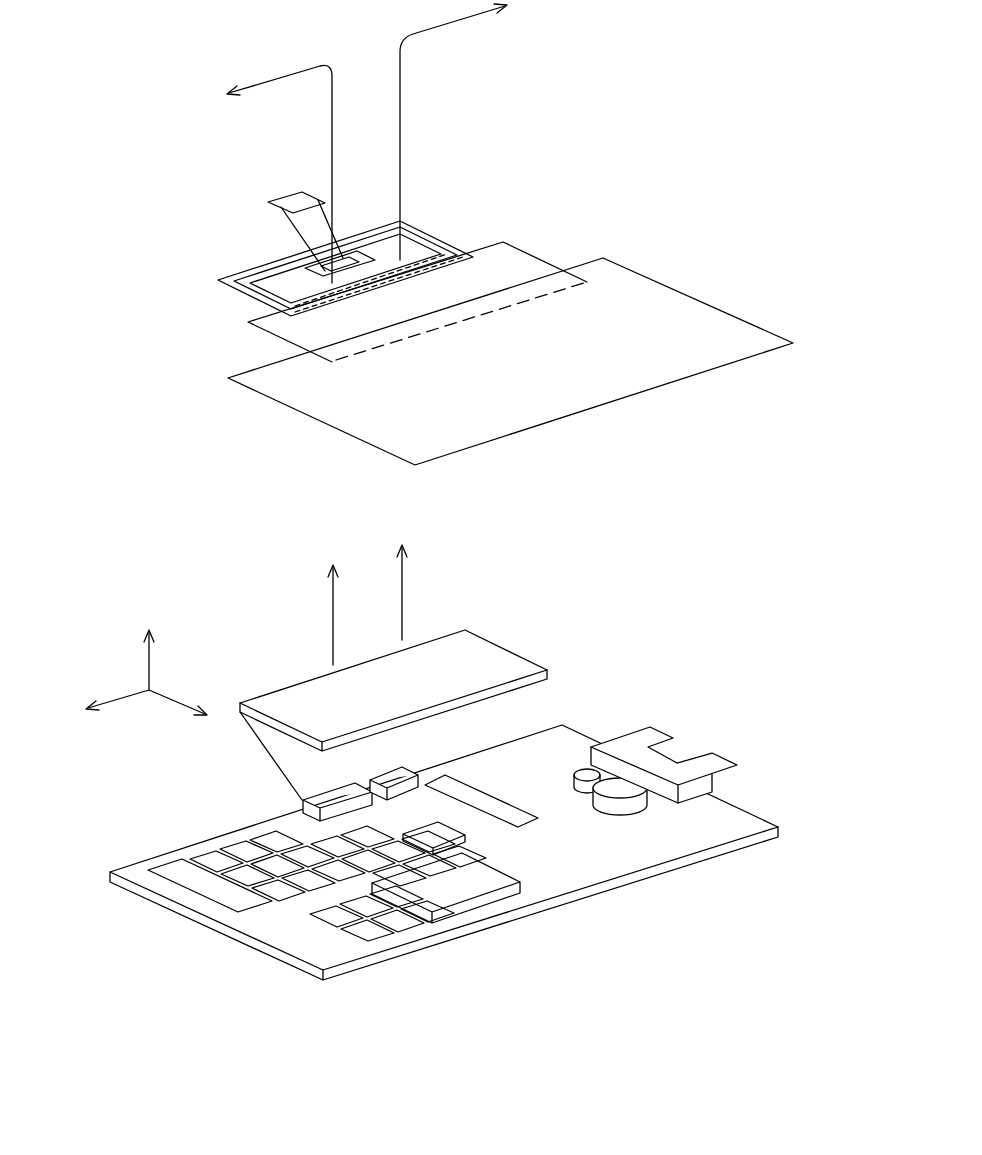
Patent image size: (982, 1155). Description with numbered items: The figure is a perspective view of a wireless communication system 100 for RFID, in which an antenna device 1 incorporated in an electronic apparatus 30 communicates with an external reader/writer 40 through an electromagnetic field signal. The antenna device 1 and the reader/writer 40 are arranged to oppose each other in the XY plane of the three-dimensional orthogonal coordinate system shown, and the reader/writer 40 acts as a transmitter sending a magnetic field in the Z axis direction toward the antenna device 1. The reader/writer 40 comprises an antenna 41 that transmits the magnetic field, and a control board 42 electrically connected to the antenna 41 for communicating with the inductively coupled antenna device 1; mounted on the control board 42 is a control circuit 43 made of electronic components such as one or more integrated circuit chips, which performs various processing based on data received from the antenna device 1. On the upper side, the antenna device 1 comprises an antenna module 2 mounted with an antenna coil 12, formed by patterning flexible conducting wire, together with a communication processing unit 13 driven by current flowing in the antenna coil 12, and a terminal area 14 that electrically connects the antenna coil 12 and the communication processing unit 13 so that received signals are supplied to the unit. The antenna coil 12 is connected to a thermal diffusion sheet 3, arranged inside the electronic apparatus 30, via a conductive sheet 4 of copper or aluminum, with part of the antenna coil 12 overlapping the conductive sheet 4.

The wireless communication system 100 is at (662, 27).
The antenna device 1 is at (818, 93).
The electronic apparatus 30 is at (494, 234).
The antenna module 2 is at (264, 177).
The thermal diffusion sheet 3 is at (618, 285).
The conductive sheet 4 is at (508, 255).
The antenna coil 12 is at (437, 238).
The communication processing unit 13 is at (290, 201).
The terminal area 14 is at (298, 254).
The reader/writer 40 is at (818, 595).
The antenna 41 is at (461, 647).
The control board 42 is at (579, 742).
The control circuit 43 is at (216, 861).